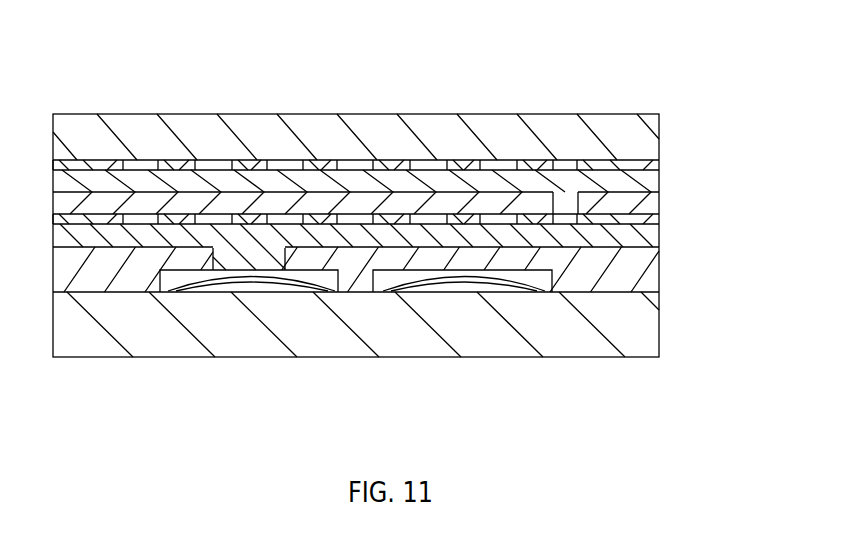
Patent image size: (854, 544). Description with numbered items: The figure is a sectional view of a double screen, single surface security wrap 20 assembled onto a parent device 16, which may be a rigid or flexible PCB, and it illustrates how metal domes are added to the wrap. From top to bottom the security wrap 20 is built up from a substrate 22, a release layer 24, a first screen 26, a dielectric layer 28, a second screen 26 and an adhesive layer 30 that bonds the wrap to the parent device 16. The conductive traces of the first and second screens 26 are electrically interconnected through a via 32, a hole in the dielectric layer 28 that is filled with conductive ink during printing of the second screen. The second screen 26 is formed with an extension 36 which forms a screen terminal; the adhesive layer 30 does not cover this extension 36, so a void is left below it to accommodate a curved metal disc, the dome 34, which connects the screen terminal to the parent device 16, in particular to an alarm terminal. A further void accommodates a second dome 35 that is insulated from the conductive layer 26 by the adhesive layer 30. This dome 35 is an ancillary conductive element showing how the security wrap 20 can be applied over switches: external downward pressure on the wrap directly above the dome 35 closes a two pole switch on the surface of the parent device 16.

The parent device 16 is at (640, 337).
The security wrap 20 is at (158, 77).
The substrate 22 is at (647, 130).
The release layer 24 is at (647, 168).
The screen 26 is at (647, 178).
The dielectric layer 28 is at (642, 203).
The adhesive layer 30 is at (642, 278).
The via 32 is at (567, 212).
The metal dome 34 is at (270, 273).
The second dome 35 is at (462, 275).
The extension 36 is at (245, 262).